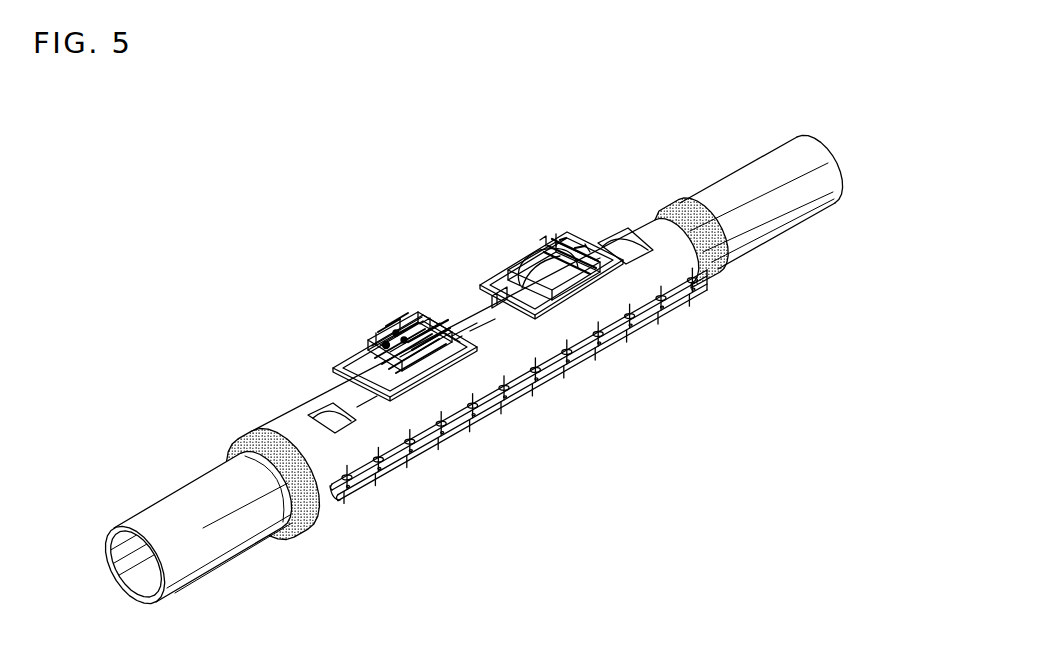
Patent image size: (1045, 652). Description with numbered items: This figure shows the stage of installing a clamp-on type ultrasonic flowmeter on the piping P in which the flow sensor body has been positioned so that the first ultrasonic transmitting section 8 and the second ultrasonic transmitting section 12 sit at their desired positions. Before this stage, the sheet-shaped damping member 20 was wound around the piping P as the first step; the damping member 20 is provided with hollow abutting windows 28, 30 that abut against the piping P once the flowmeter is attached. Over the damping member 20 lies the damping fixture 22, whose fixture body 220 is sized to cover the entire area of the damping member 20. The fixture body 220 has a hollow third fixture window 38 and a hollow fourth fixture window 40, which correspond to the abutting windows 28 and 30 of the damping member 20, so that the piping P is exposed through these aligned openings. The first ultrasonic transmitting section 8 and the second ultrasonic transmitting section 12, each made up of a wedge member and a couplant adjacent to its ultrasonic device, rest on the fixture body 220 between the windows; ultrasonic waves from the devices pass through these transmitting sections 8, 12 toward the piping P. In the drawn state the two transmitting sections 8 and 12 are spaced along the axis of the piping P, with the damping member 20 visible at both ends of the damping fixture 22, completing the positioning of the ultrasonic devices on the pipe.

The piping P is at (188, 500).
The damping member 20 is at (272, 442).
The first ultrasonic transmitting section 8 is at (368, 347).
The second ultrasonic transmitting section 12 is at (547, 237).
The fixture body 220 is at (477, 318).
The damping fixture 22 is at (453, 325).
The third fixture window 38 is at (323, 417).
The abutting window 28 is at (304, 386).
The fourth fixture window 40 is at (620, 247).
The abutting window 30 is at (607, 223).